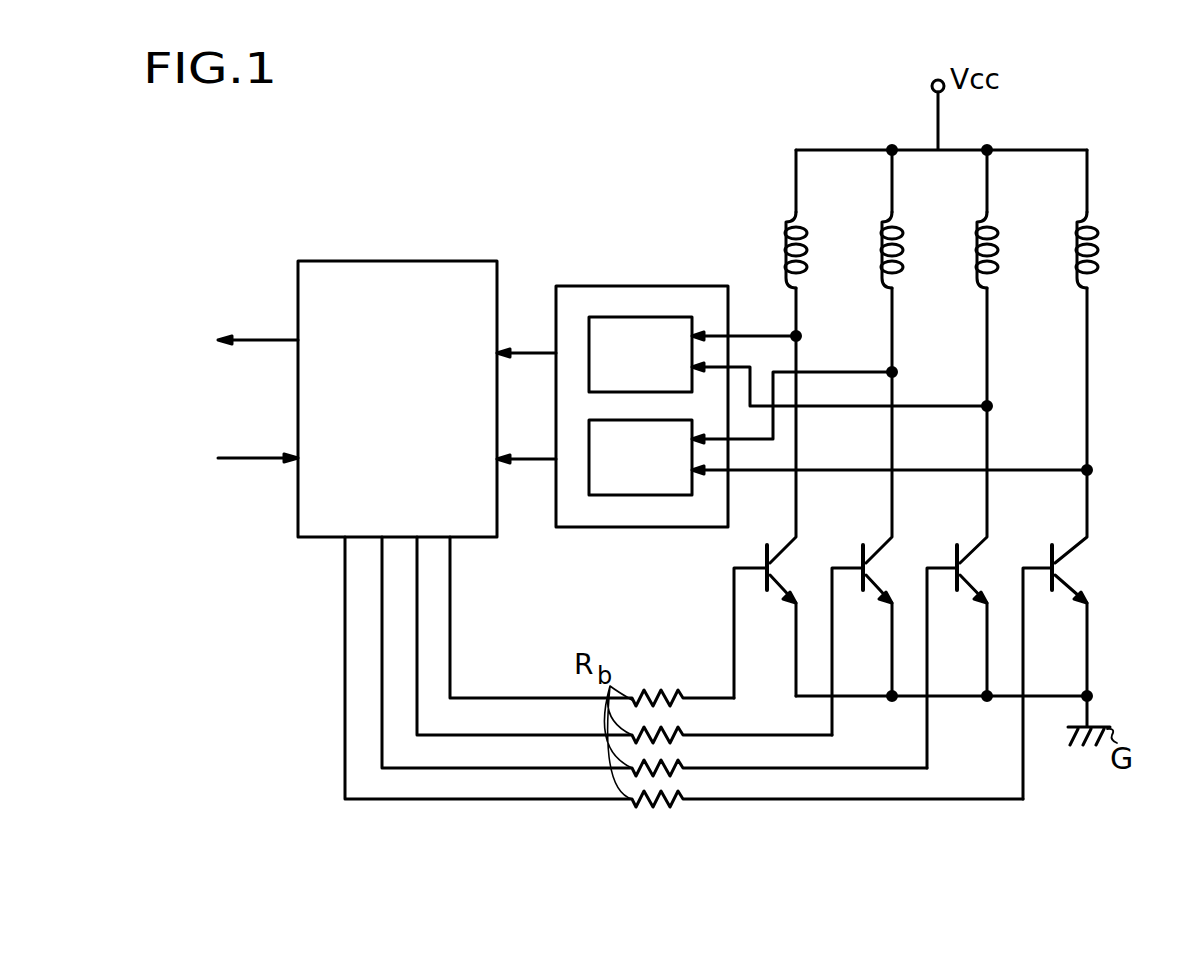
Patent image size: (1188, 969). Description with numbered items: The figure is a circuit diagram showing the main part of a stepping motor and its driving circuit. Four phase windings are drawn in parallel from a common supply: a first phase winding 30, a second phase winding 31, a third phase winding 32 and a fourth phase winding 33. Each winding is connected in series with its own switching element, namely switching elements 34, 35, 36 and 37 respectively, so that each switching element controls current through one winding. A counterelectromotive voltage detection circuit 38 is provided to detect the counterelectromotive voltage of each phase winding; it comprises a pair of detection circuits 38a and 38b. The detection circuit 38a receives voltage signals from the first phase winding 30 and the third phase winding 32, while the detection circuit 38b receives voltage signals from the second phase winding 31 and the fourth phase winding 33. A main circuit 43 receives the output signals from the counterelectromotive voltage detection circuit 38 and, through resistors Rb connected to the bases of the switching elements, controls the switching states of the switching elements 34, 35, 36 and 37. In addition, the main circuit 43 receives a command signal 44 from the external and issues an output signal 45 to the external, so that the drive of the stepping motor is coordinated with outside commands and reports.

The first phase winding 30 is at (786, 240).
The second phase winding 31 is at (882, 240).
The third phase winding 32 is at (977, 240).
The fourth phase winding 33 is at (1077, 240).
The switching element 34 is at (767, 590).
The switching element 35 is at (863, 590).
The switching element 36 is at (957, 590).
The switching element 37 is at (1052, 590).
The counterelectromotive voltage detection circuit 38 is at (675, 286).
The detection circuit 38a is at (620, 317).
The detection circuit 38b is at (633, 495).
The main circuit 43 is at (413, 261).
The command signal 44 is at (261, 458).
The output signal 45 is at (268, 340).